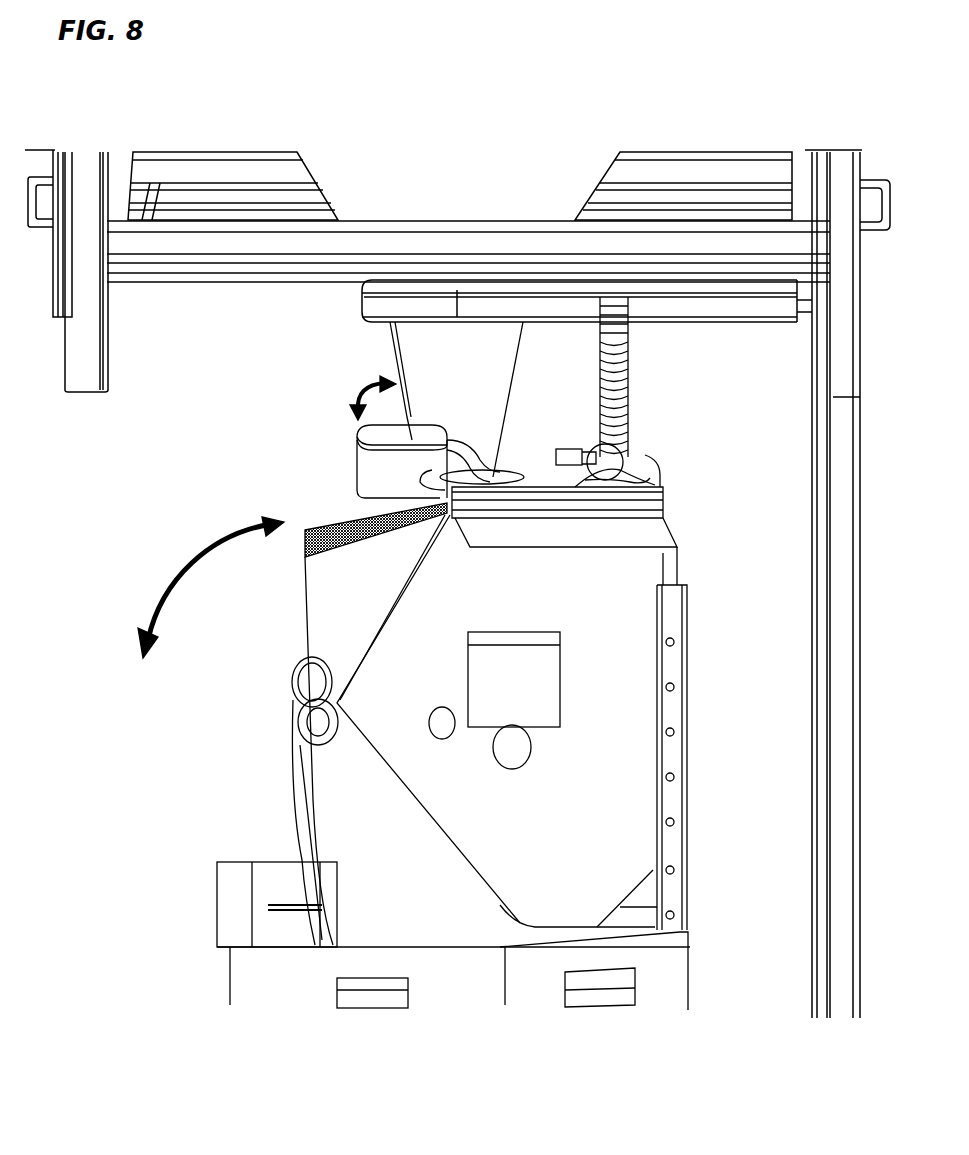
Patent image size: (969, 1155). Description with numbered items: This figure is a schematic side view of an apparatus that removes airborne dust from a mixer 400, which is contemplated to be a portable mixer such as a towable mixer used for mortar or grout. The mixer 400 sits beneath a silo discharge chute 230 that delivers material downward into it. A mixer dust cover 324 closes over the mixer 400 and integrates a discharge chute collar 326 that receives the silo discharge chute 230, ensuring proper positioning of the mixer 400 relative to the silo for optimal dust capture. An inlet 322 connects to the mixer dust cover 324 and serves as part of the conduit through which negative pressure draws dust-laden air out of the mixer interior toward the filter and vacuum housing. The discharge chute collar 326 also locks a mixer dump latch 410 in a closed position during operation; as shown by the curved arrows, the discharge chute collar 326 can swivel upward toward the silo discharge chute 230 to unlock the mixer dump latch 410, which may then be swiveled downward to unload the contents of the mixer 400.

The silo discharge chute 230 is at (410, 365).
The discharge chute collar 326 is at (372, 467).
The inlet 322 is at (610, 405).
The mixer dust cover 324 is at (655, 518).
The mixer 400 is at (593, 667).
The mixer dump latch 410 is at (332, 602).